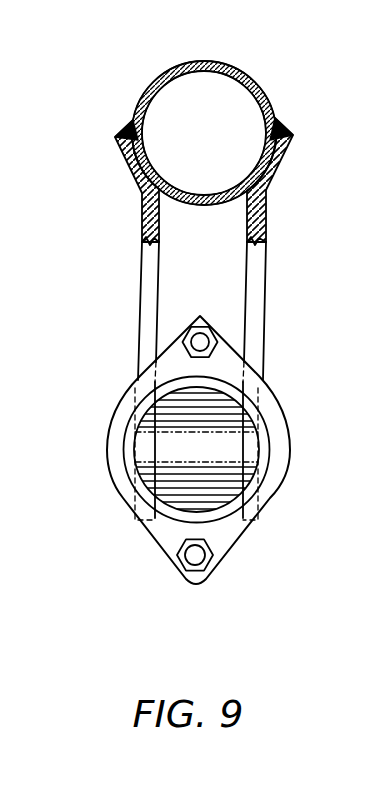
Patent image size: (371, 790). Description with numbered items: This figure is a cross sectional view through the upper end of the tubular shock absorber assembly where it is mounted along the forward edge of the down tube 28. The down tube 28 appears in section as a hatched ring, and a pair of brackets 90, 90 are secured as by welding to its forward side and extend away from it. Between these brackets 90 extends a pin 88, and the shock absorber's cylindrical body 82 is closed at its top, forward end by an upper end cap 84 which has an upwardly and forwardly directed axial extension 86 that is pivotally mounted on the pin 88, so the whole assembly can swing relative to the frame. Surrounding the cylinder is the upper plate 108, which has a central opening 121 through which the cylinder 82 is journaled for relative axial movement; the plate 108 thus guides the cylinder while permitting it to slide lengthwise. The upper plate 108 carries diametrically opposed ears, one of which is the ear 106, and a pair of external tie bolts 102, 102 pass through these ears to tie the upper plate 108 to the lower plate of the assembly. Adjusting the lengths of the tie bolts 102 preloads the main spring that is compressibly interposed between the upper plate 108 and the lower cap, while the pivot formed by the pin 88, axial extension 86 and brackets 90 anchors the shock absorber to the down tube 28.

The down tube 28 is at (248, 83).
The brackets 90 is at (147, 262).
The tie bolts 102 is at (200, 340).
The upper plate 108 is at (196, 433).
The central opening 121 is at (263, 377).
The cylindrical body 82 is at (267, 423).
The pin 88 is at (165, 432).
The axial extension 86 is at (216, 461).
The upper end cap 84 is at (258, 482).
The ear 106 is at (178, 578).